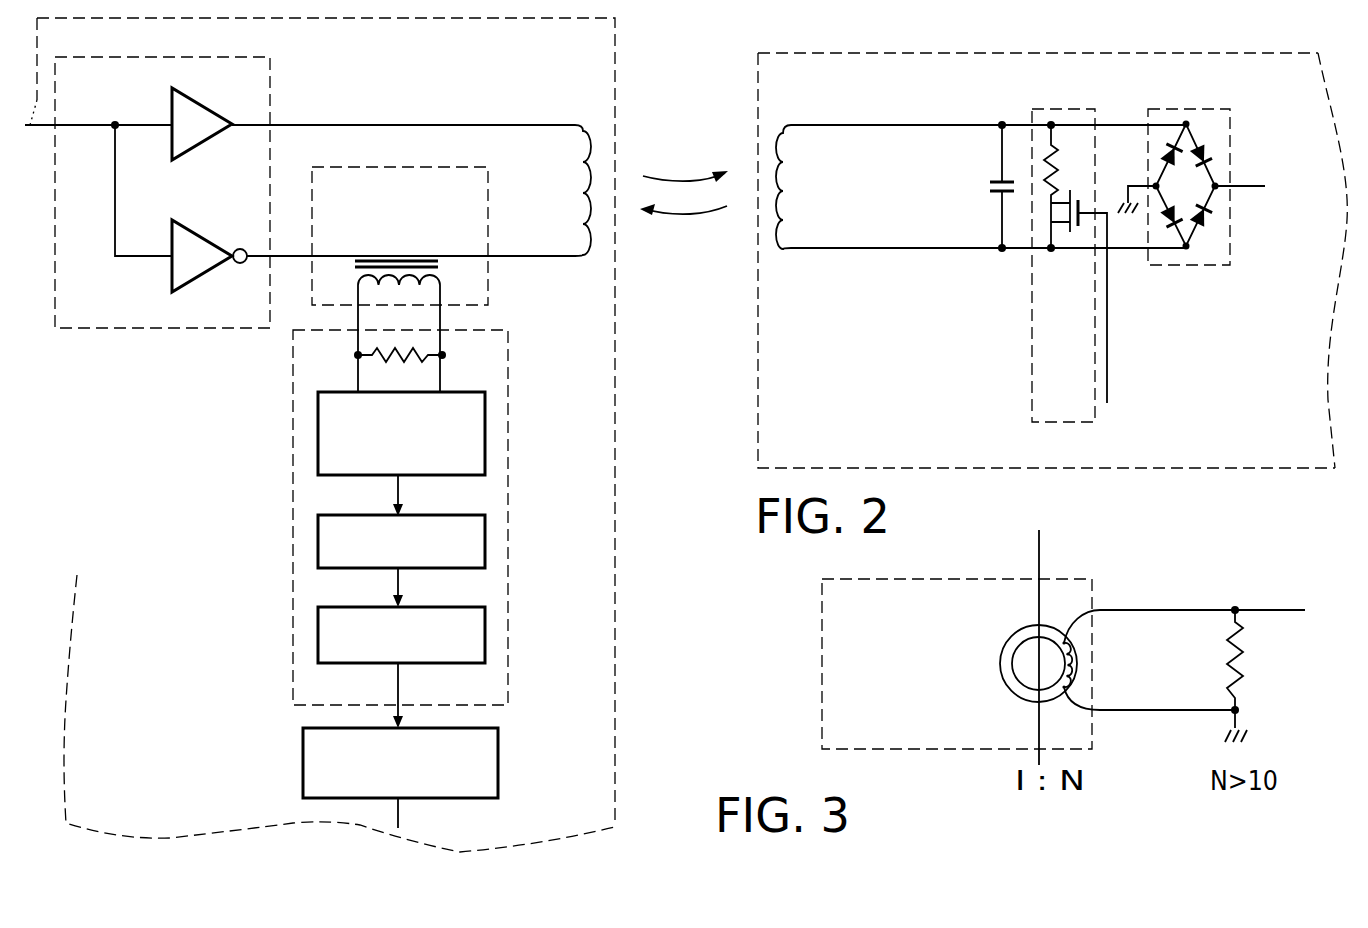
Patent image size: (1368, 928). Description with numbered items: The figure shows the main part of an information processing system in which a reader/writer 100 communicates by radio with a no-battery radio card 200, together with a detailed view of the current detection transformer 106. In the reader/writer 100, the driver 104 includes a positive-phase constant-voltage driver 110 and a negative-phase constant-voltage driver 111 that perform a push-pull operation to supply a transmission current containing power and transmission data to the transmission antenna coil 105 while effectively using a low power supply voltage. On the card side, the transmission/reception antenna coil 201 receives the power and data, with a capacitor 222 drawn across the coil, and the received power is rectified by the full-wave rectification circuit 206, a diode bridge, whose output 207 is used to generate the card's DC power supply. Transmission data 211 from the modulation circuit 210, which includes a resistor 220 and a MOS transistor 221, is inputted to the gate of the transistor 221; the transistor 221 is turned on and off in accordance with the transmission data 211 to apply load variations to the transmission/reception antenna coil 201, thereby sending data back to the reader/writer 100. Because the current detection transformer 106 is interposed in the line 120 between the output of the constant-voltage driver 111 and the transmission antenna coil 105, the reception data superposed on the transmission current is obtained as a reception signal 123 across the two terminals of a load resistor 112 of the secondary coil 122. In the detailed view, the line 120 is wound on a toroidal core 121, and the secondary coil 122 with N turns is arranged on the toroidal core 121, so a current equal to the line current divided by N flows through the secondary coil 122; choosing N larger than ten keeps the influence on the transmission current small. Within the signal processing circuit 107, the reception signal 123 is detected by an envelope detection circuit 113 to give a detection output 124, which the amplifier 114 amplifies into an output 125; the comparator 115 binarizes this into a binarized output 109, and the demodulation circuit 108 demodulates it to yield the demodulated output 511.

In FIG. 2, the reader/writer 100 is at (617, 33).
In FIG. 2, the driver 104 is at (271, 86).
In FIG. 2, the transmission antenna coil 105 is at (577, 155).
In FIG. 2, the current detection transformer 106 is at (376, 167).
In FIG. 3, the current detection transformer 106 is at (919, 751).
In FIG. 2, the signal processing circuit 107 is at (509, 440).
In FIG. 2, the demodulation circuit 108 is at (303, 765).
In FIG. 2, the binarized output 109 is at (400, 683).
In FIG. 2, the positive-phase constant-voltage driver 110 is at (212, 109).
In FIG. 2, the negative-phase constant-voltage driver 111 is at (212, 239).
In FIG. 2, the load resistor 112 is at (440, 354).
In FIG. 3, the load resistor 112 is at (1244, 666).
In FIG. 2, the envelope detection circuit 113 is at (317, 438).
In FIG. 2, the amplifier 114 is at (317, 544).
In FIG. 2, the comparator 115 is at (317, 639).
In FIG. 2, the line 120 is at (533, 256).
In FIG. 3, the line 120 is at (1040, 555).
In FIG. 3, the toroidal core 121 is at (1011, 686).
In FIG. 2, the secondary coil 122 is at (433, 283).
In FIG. 3, the secondary coil 122 is at (1068, 703).
In FIG. 2, the reception signal 123 is at (357, 377).
In FIG. 3, the reception signal 123 is at (1256, 608).
In FIG. 2, the detection output 124 is at (400, 490).
In FIG. 2, the output 125 is at (400, 582).
In FIG. 2, the demodulated output 511 is at (400, 815).
In FIG. 2, the no-battery radio card 200 is at (950, 62).
In FIG. 2, the transmission/reception antenna coil 201 is at (787, 246).
In FIG. 2, the full-wave rectification circuit 206 is at (1231, 125).
In FIG. 2, the output 207 is at (1250, 186).
In FIG. 2, the modulation circuit 210 is at (1032, 377).
In FIG. 2, the transmission data 211 is at (1108, 333).
In FIG. 2, the resistor 220 is at (1056, 178).
In FIG. 2, the transistor 221 is at (1053, 203).
In FIG. 2, the capacitor 222 is at (991, 186).